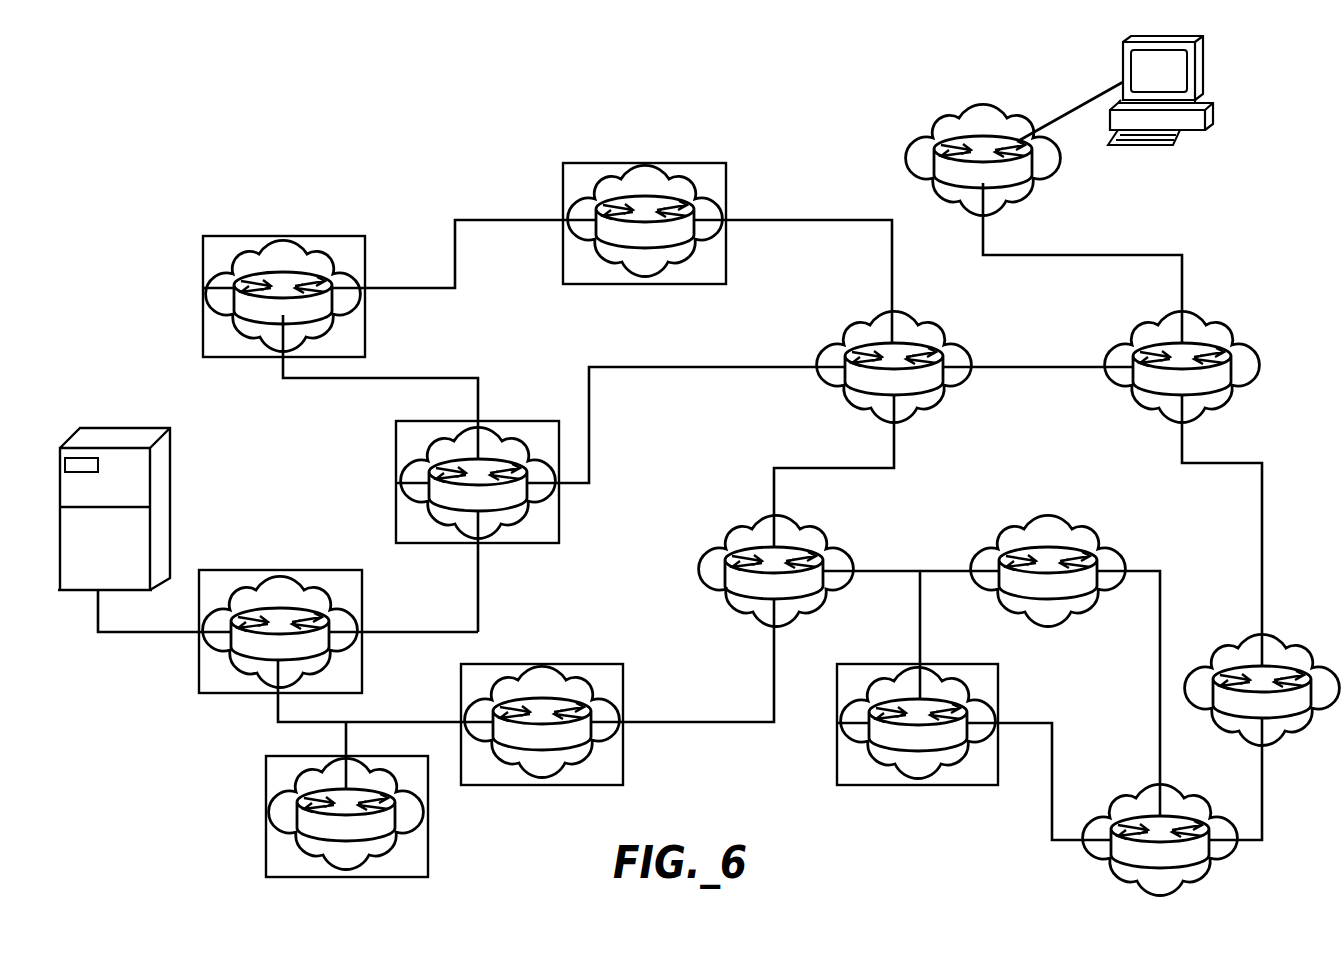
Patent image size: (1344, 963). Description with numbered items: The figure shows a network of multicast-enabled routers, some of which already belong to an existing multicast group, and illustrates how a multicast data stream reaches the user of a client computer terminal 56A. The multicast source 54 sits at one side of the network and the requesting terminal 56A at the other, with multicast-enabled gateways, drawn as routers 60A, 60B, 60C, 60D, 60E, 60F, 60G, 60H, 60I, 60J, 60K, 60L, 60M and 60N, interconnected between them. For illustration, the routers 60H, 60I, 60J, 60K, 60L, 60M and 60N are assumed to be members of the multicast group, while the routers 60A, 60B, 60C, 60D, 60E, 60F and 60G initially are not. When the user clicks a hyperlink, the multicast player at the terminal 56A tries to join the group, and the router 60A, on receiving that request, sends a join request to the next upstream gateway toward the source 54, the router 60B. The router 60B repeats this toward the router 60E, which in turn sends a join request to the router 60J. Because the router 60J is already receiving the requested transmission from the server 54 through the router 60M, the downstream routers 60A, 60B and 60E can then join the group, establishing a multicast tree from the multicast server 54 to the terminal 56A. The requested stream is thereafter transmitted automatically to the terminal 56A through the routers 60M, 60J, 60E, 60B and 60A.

The multicast source 54 is at (173, 498).
The client computer terminal 56A is at (1205, 62).
The router 60A is at (960, 140).
The router 60B is at (1150, 330).
The router 60C is at (1250, 634).
The router 60D is at (1132, 795).
The router 60E is at (868, 328).
The router 60F is at (1028, 530).
The router 60G is at (746, 530).
The router 60H is at (885, 686).
The router 60I is at (617, 183).
The router 60J is at (450, 442).
The router 60K is at (580, 672).
The router 60L is at (322, 252).
The router 60M is at (310, 582).
The router 60N is at (413, 830).